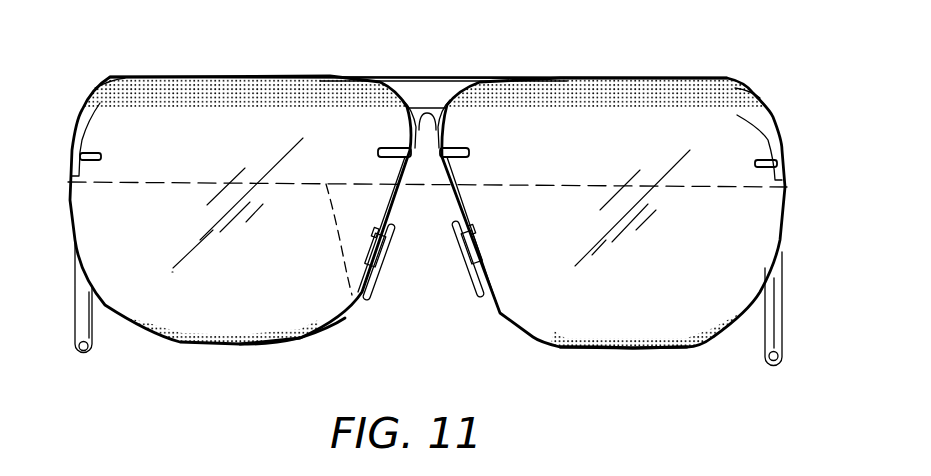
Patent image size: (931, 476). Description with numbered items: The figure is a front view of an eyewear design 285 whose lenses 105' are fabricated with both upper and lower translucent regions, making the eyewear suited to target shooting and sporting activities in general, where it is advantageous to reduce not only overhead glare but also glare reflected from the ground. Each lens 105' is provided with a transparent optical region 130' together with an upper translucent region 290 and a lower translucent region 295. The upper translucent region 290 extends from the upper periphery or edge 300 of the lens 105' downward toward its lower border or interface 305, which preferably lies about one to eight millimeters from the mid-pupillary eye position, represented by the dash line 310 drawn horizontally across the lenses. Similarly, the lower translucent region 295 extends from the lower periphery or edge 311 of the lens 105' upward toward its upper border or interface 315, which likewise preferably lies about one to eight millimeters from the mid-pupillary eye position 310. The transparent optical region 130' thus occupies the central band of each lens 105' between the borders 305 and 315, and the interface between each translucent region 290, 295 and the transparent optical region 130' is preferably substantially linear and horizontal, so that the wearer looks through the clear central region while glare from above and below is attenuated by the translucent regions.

The eyewear design 285 is at (62, 28).
The upper translucent region 290 is at (186, 78).
The lower translucent region 295 is at (247, 337).
The upper periphery 300 is at (245, 77).
The lower border 305 is at (147, 108).
The lens 105' is at (434, 147).
The transparent optical region 130' is at (439, 205).
The mid-pupillary eye position 310 is at (362, 307).
The lower periphery 311 is at (300, 343).
The upper border 315 is at (92, 283).